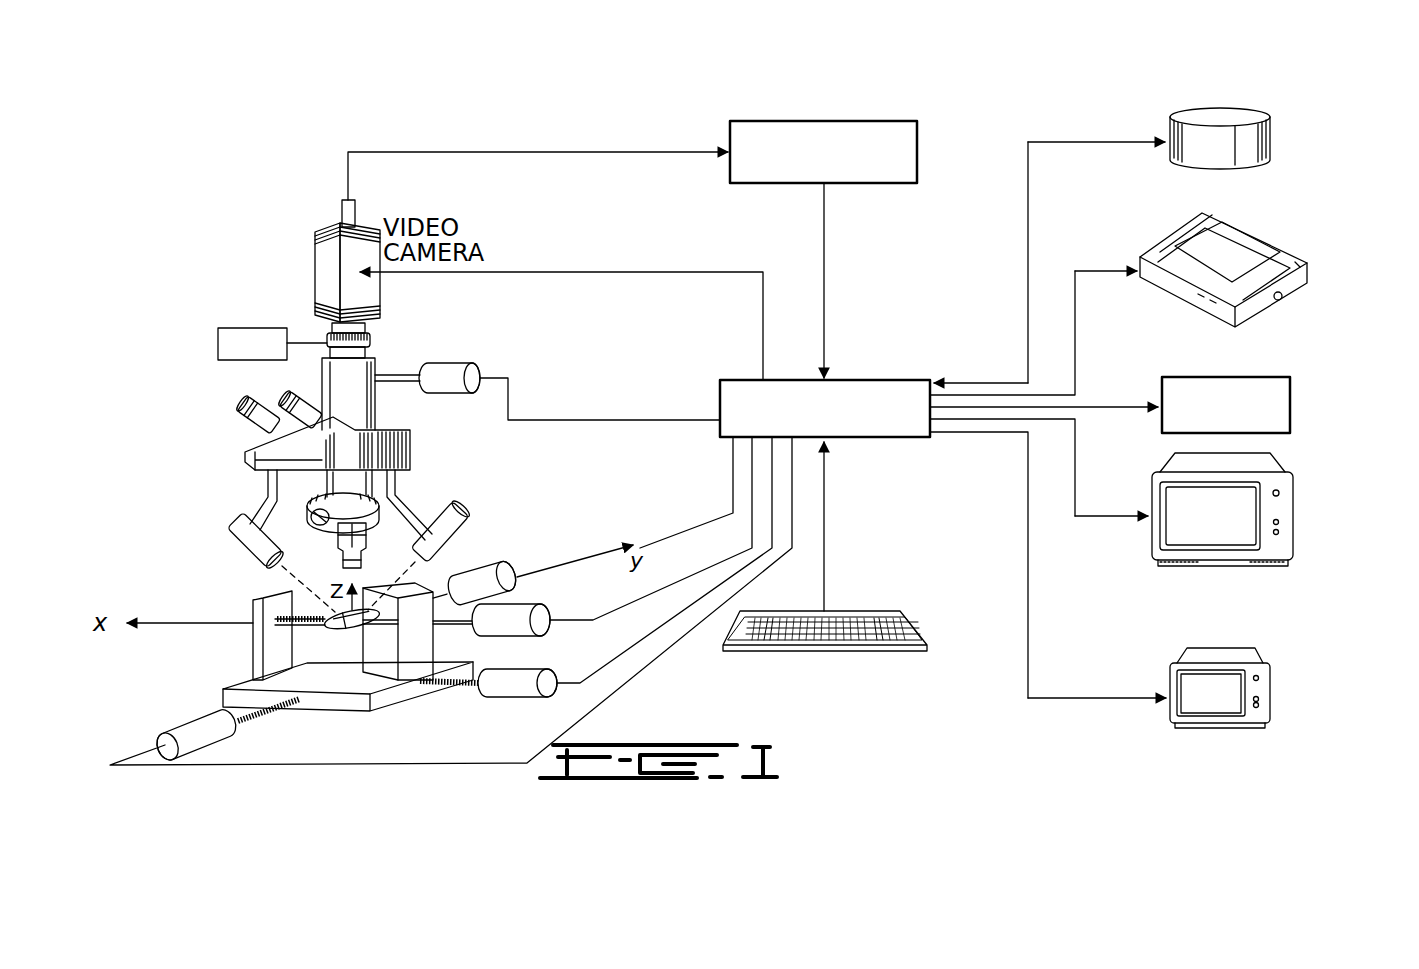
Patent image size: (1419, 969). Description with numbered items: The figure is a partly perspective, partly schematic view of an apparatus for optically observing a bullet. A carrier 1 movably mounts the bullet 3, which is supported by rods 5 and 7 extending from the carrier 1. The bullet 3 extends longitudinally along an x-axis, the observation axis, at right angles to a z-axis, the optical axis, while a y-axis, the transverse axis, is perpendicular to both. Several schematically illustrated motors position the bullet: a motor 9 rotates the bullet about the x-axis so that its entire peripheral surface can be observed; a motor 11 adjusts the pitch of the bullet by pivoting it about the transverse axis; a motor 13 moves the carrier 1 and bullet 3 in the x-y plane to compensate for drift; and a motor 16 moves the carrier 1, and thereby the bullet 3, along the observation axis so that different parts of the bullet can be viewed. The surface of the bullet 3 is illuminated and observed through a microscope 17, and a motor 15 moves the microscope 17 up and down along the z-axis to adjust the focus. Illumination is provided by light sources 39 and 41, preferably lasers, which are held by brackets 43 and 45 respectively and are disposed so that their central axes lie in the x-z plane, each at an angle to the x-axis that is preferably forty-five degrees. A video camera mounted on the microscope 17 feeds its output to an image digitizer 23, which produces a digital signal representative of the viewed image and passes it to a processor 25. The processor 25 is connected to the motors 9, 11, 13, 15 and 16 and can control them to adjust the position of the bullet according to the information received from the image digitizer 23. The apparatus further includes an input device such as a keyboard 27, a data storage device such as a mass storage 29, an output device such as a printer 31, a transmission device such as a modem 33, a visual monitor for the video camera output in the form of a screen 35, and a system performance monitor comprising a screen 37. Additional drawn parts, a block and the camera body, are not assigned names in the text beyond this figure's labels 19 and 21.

The carrier 1 is at (388, 697).
The bullet 3 is at (333, 628).
The rod 5 is at (385, 625).
The rod 7 is at (290, 624).
The motor 9 is at (522, 608).
The motor 11 is at (485, 580).
The motor 13 is at (200, 724).
The motor 15 is at (452, 367).
The motor 16 is at (508, 690).
The microscope 17 is at (353, 400).
The light source 19 is at (247, 340).
The video camera 21 is at (372, 292).
The image digitizer 23 is at (917, 143).
The processor 25 is at (890, 383).
The keyboard 27 is at (915, 632).
The mass storage 29 is at (1255, 107).
The printer 31 is at (1307, 277).
The modem 33 is at (1290, 398).
The screen 35 is at (1293, 508).
The screen 37 is at (1270, 691).
The light source 39 is at (447, 512).
The light source 41 is at (232, 534).
The bracket 43 is at (410, 466).
The bracket 45 is at (263, 497).